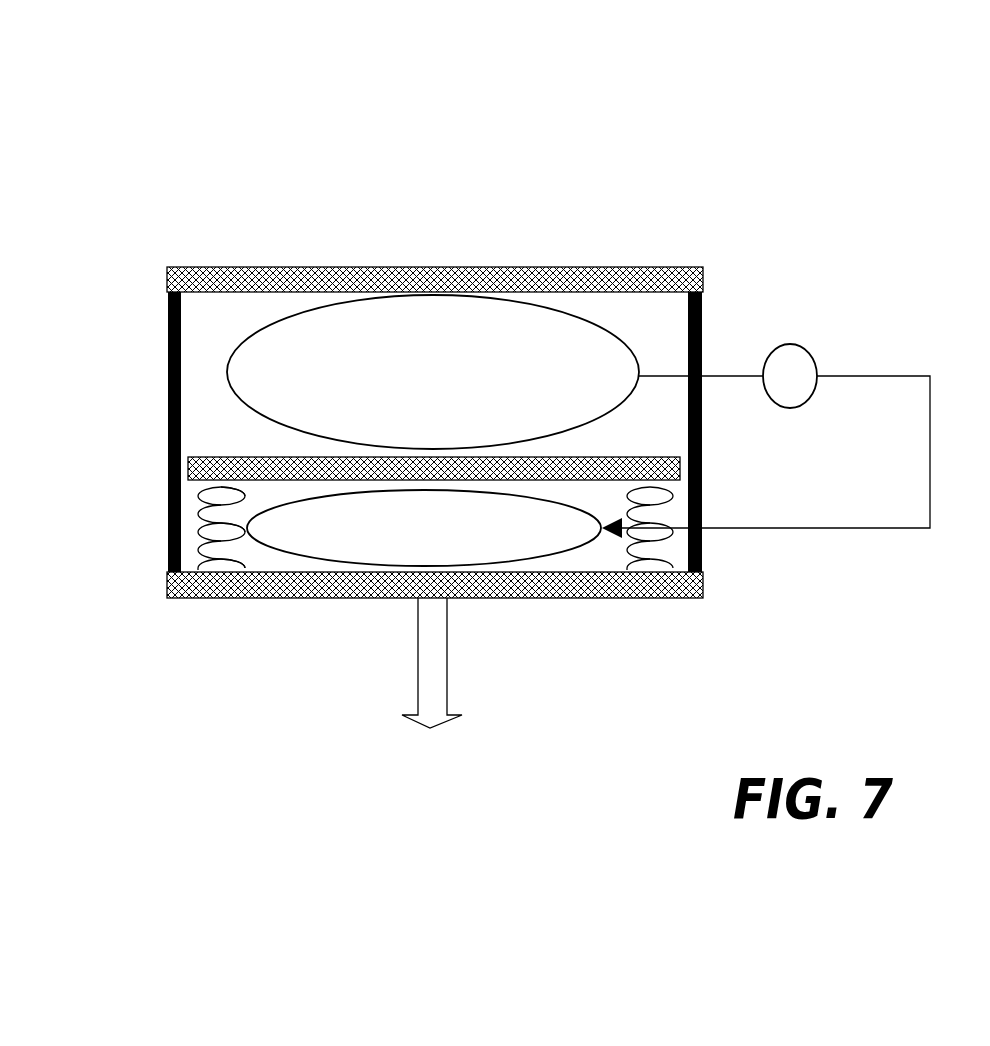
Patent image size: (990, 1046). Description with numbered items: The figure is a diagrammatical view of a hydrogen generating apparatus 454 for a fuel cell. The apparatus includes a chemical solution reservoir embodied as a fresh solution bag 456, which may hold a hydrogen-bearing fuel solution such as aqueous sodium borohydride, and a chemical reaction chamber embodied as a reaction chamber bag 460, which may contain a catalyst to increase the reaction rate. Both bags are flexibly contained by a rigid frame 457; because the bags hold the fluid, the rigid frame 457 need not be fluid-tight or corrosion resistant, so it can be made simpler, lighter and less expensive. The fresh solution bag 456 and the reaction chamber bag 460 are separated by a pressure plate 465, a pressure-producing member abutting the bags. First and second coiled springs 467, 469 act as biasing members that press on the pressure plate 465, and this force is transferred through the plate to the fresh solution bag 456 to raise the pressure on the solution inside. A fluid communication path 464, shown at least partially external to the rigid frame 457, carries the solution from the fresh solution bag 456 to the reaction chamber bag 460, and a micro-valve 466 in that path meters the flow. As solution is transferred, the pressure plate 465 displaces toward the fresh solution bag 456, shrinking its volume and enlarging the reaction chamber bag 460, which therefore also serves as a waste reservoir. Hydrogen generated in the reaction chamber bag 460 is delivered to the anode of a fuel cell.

The hydrogen generating apparatus 454 is at (706, 148).
The fresh solution bag 456 is at (582, 313).
The rigid frame 457 is at (255, 267).
The reaction chamber bag 460 is at (563, 555).
The fluid communication path 464 is at (832, 528).
The pressure plate 465 is at (215, 457).
The micro-valve 466 is at (805, 347).
The first coiled spring 467 is at (198, 598).
The second coiled spring 469 is at (683, 598).